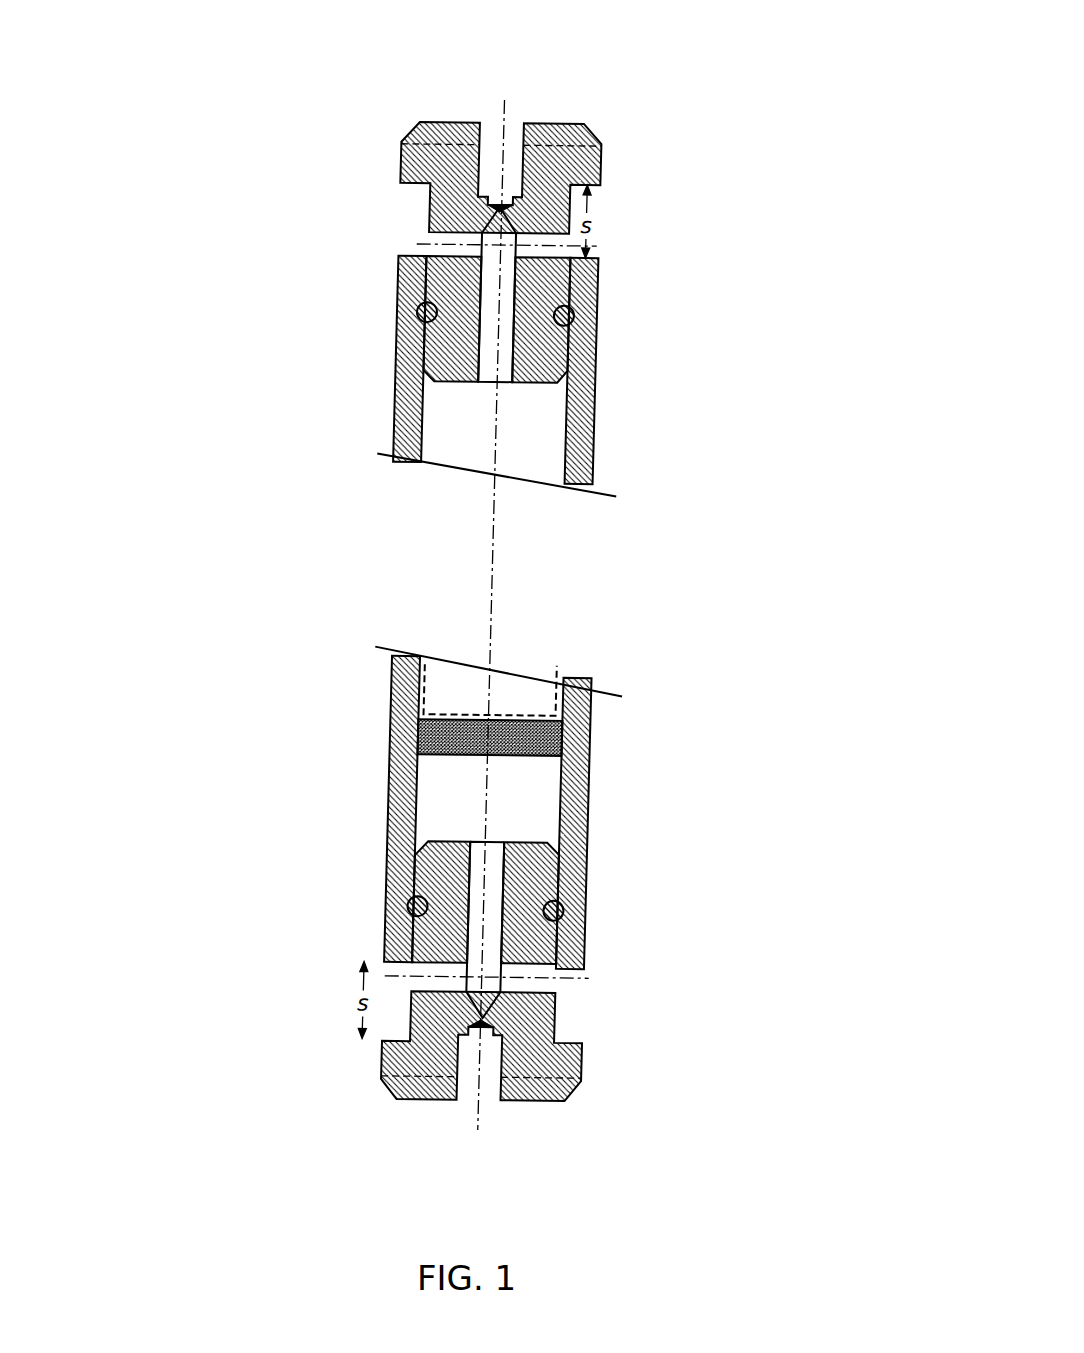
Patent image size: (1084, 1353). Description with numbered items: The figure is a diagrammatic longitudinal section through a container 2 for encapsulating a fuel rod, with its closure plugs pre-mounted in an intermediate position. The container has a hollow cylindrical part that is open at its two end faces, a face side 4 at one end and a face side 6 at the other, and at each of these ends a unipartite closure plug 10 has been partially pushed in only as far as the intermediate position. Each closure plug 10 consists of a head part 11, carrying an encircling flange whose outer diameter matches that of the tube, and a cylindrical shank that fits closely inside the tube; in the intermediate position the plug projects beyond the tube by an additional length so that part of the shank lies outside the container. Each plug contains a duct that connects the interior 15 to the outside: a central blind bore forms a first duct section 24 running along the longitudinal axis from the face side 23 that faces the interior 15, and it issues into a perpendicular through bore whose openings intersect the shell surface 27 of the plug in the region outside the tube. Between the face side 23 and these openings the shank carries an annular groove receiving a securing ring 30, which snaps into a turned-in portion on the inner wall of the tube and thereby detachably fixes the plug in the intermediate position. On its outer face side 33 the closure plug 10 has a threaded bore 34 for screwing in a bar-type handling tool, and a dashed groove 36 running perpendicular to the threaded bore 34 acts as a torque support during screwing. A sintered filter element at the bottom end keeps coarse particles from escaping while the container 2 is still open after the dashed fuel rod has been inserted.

The container 2 is at (682, 432).
The face side 4 is at (408, 240).
The face side 6 is at (560, 983).
The closure plug 10 is at (616, 141).
The head part 11 is at (583, 137).
The interior 15 is at (530, 813).
The face side 23 is at (452, 382).
The first duct section 24 is at (500, 356).
The shell surface 27 is at (427, 204).
The securing ring 30 is at (422, 300).
The face side 33 is at (557, 123).
The threaded bore 34 is at (518, 121).
The groove 36 is at (440, 123).